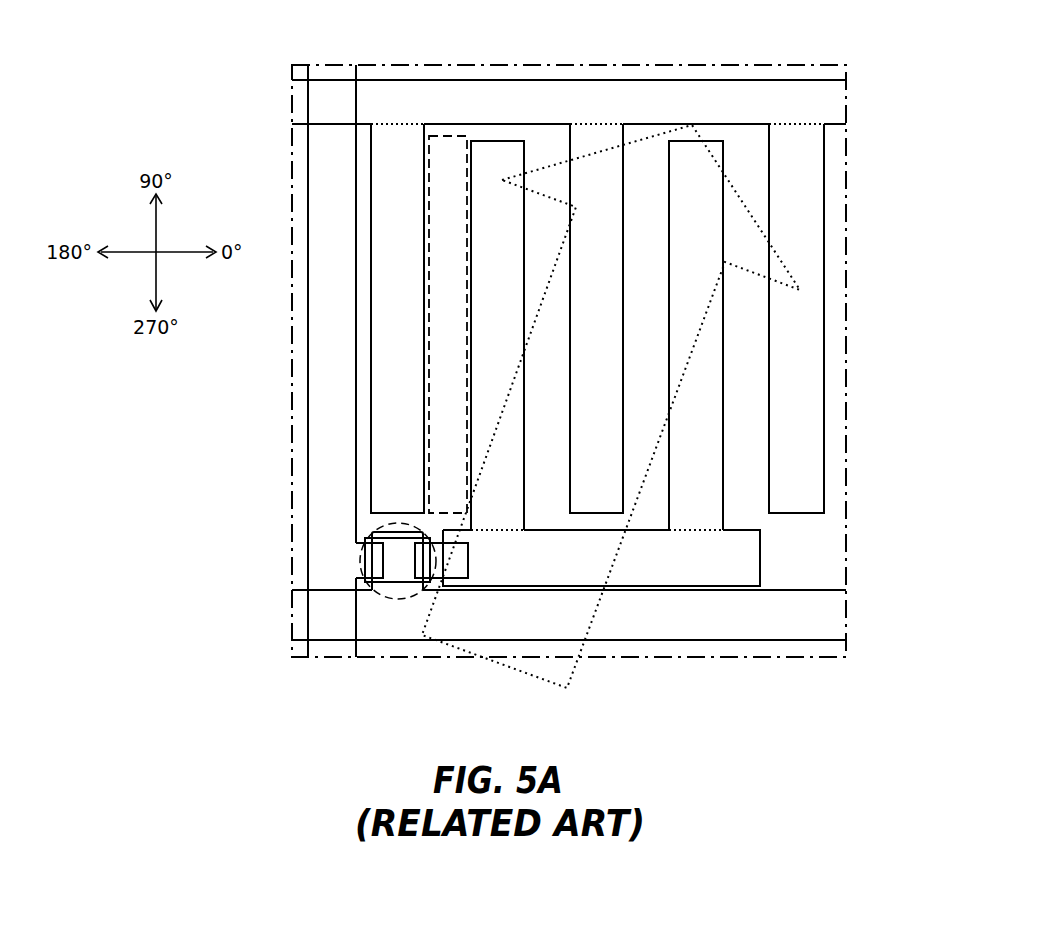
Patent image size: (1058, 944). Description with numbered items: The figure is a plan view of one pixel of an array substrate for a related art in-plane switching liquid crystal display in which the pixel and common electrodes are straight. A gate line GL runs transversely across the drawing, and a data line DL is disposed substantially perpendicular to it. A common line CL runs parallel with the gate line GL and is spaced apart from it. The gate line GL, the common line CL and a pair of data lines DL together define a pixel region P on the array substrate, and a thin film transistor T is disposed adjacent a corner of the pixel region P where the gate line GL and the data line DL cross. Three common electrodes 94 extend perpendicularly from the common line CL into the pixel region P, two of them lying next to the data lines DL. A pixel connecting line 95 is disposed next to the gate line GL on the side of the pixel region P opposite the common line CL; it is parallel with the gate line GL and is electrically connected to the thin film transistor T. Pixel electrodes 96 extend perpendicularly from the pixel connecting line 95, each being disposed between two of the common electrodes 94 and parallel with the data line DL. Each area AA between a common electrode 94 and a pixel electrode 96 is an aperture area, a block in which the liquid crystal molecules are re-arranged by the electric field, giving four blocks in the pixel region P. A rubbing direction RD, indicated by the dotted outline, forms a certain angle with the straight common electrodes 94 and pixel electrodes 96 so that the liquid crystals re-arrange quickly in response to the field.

The aperture area AA is at (447, 135).
The common line CL is at (846, 80).
The gate line GL is at (846, 590).
The data line DL is at (356, 658).
The common electrode 94 is at (400, 213).
The pixel electrode 96 is at (503, 347).
The pixel connecting line 95 is at (745, 552).
The pixel region P is at (836, 463).
The thin film transistor T is at (398, 599).
The rubbing direction RD is at (539, 680).